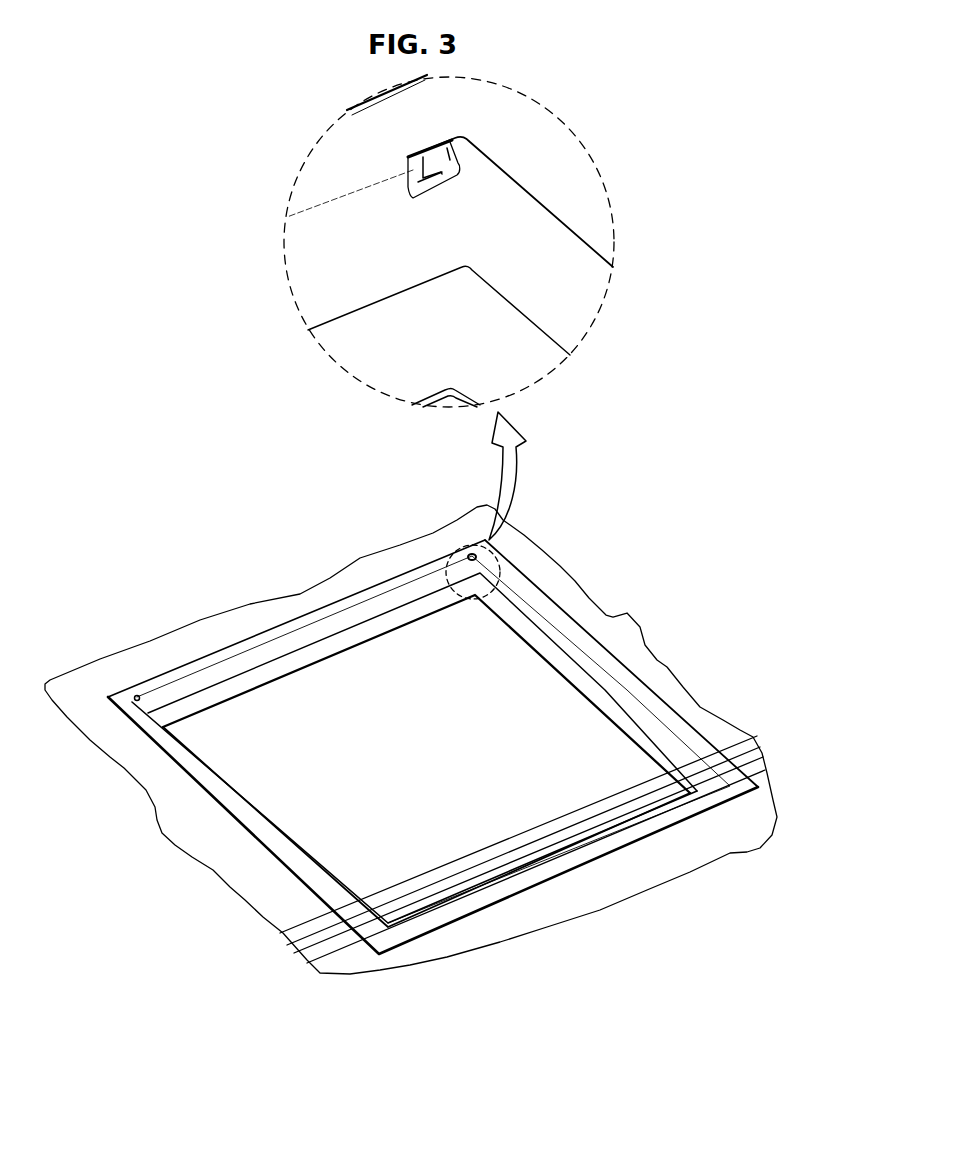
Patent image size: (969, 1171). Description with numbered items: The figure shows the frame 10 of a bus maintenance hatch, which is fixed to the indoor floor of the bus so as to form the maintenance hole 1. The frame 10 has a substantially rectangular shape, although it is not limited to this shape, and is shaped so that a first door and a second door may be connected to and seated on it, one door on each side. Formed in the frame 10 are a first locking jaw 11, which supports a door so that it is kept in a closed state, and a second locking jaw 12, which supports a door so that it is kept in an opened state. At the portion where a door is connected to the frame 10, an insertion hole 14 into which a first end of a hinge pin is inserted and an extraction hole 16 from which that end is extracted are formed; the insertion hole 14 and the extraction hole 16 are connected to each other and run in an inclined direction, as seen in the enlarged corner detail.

The maintenance hole 1 is at (457, 702).
The frame 10 is at (540, 880).
The first locking jaw 11 is at (278, 670).
The second locking jaw 12 is at (582, 650).
The insertion hole 14 is at (420, 167).
The extraction hole 16 is at (427, 143).